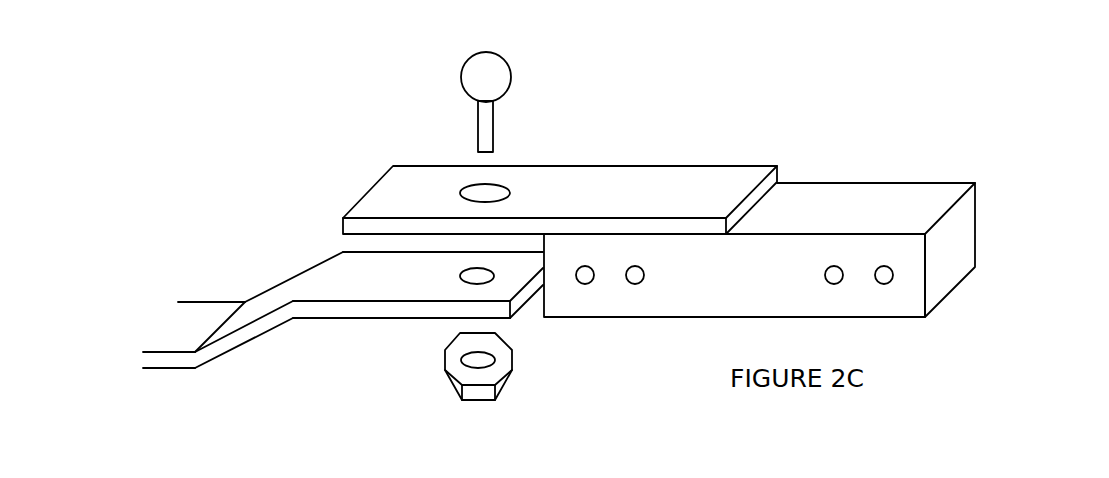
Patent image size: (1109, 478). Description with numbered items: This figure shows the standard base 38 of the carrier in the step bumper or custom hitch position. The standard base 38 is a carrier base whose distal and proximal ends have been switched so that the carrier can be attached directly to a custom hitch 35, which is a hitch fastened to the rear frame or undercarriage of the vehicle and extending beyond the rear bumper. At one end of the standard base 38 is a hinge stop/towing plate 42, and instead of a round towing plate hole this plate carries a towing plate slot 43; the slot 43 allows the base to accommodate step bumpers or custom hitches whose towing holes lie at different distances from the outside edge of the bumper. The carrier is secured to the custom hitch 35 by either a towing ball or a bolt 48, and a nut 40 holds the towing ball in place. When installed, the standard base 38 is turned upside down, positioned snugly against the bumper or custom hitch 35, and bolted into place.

The custom hitch 35 is at (344, 283).
The standard base 38 is at (843, 200).
The nut 40 is at (495, 360).
The hinge stop/towing plate 42 is at (610, 183).
The towing plate slot 43 is at (458, 185).
The bolt 48 is at (461, 70).